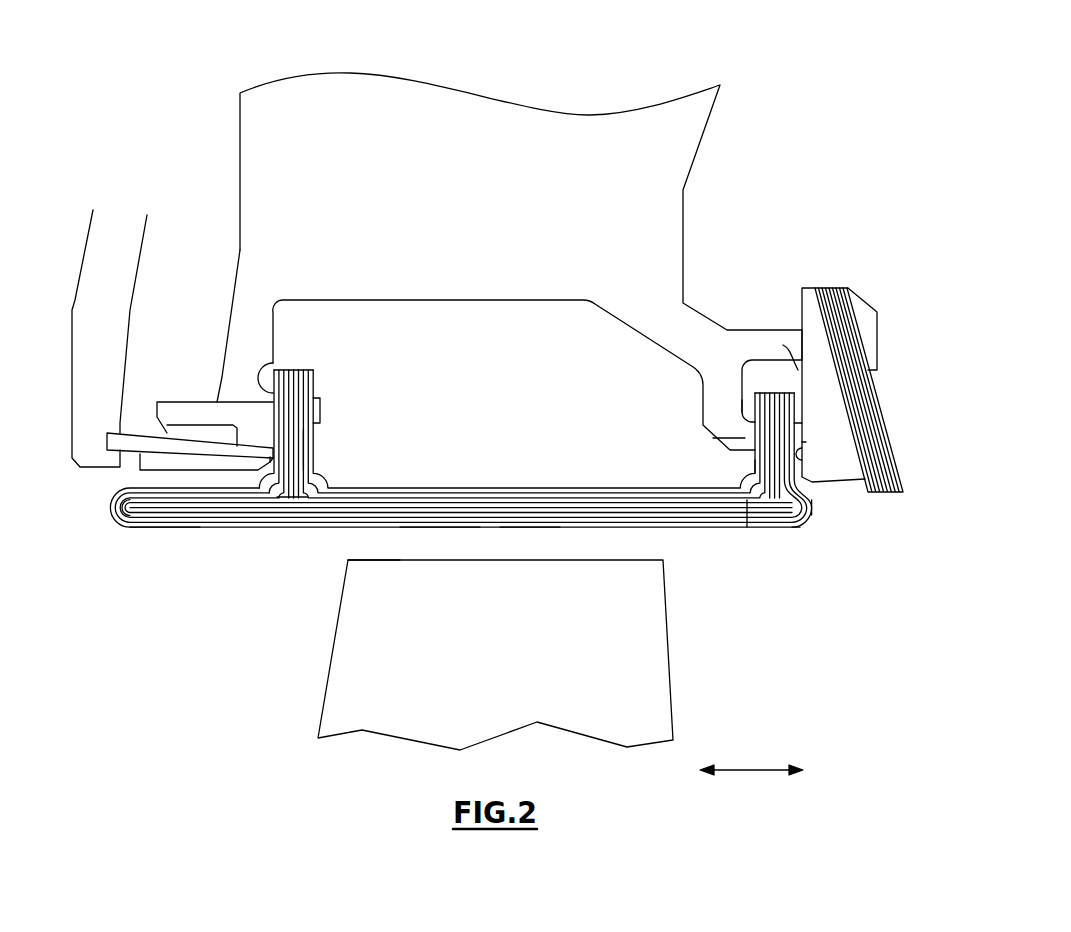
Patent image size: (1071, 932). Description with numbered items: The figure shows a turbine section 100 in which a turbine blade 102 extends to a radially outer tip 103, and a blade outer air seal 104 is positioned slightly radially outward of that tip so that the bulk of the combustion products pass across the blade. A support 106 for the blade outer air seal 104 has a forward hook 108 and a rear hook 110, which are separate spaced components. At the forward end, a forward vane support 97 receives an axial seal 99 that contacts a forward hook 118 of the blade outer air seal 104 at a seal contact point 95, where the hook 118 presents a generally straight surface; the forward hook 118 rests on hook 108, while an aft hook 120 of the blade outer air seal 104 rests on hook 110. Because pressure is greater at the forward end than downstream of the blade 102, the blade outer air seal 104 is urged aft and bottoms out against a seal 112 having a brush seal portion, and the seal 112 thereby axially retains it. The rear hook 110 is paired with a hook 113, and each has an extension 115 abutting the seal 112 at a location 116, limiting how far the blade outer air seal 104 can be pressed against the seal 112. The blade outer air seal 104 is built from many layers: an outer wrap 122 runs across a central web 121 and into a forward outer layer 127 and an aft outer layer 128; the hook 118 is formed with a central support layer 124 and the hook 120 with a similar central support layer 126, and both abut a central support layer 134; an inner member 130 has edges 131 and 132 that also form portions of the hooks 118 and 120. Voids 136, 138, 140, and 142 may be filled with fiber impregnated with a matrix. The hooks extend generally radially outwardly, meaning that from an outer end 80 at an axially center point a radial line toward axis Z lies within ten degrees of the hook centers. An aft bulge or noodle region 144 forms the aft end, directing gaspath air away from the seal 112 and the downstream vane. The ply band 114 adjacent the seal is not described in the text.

The turbine section 100 is at (205, 93).
The outer end 80 is at (530, 391).
The seal contact point 95 is at (271, 462).
The forward vane support 97 is at (90, 430).
The axial seal 99 is at (218, 450).
The turbine blade 102 is at (352, 690).
The radially outer tip 103 is at (368, 562).
The blade outer air seal 104 is at (139, 530).
The support 106 is at (248, 302).
The forward hook 108 is at (263, 413).
The rear hook 110 is at (713, 442).
The seal 112 is at (833, 478).
The paired hook 113 is at (743, 345).
The inclined ply band 114 is at (895, 493).
The extension 115 is at (798, 370).
The abutment location 116 is at (800, 338).
The forward hook 118 is at (307, 444).
The aft hook 120 is at (750, 410).
The central web 121 is at (440, 527).
The outer wrap 122 is at (531, 527).
The central support layer 124 is at (292, 370).
The central support layer 126 is at (768, 393).
The forward outer layer 127 is at (258, 365).
The aft outer layer 128 is at (803, 443).
The inner BOAS member 130 is at (368, 492).
The edge 131 is at (313, 392).
The edge 132 is at (755, 462).
The central support layer 134 is at (460, 448).
The void 136 is at (113, 516).
The void 138 is at (308, 497).
The void 140 is at (747, 500).
The void 142 is at (793, 508).
The noodle region 144 is at (803, 512).